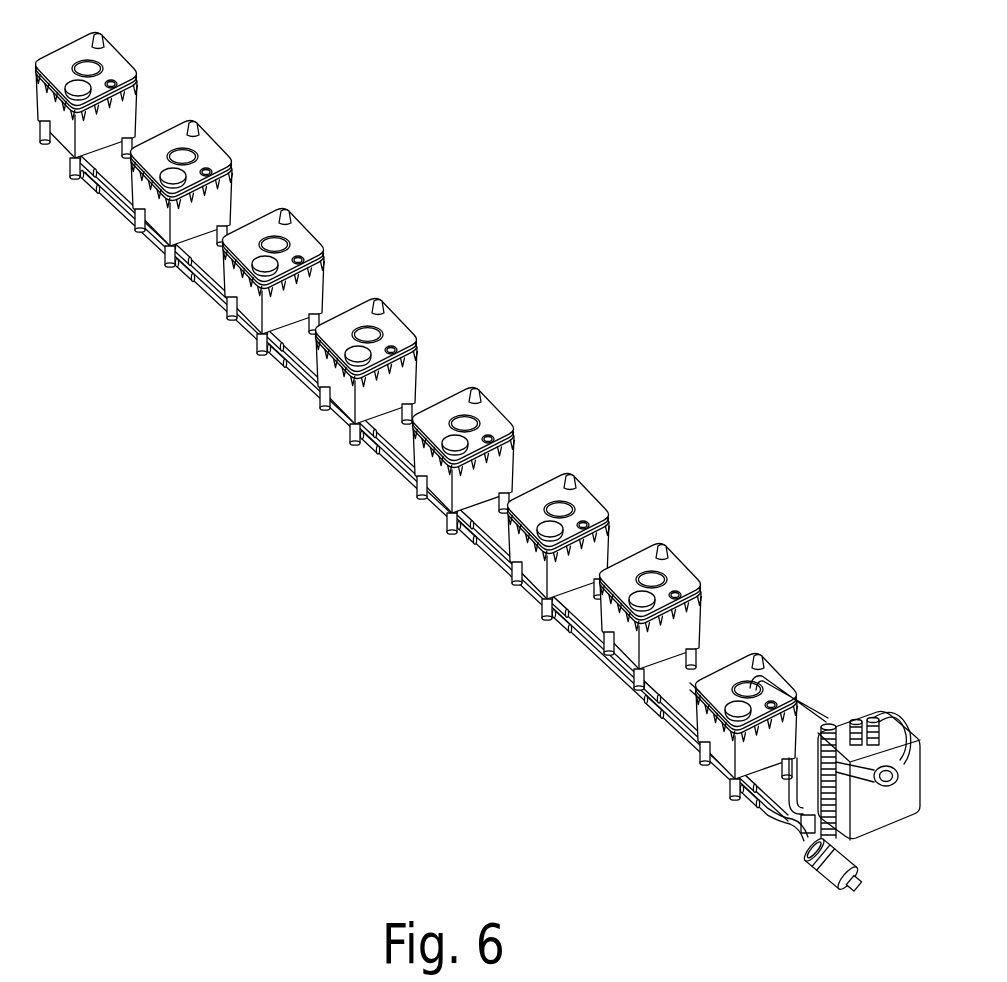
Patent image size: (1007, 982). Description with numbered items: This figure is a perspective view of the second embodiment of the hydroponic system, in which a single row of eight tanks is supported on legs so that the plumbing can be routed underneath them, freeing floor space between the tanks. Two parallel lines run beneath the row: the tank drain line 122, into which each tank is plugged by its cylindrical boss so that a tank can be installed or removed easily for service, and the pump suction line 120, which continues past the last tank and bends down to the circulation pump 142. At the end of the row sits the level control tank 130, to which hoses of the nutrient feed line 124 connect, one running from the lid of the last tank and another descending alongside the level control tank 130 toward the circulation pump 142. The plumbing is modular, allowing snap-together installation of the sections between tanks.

The pump suction line 120 is at (393, 458).
The tank drain line 122 is at (592, 622).
The nutrient feed line 124 is at (695, 685).
The level control tank 130 is at (900, 800).
The circulation pump 142 is at (827, 862).